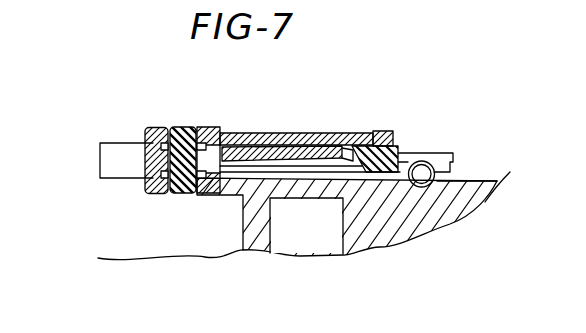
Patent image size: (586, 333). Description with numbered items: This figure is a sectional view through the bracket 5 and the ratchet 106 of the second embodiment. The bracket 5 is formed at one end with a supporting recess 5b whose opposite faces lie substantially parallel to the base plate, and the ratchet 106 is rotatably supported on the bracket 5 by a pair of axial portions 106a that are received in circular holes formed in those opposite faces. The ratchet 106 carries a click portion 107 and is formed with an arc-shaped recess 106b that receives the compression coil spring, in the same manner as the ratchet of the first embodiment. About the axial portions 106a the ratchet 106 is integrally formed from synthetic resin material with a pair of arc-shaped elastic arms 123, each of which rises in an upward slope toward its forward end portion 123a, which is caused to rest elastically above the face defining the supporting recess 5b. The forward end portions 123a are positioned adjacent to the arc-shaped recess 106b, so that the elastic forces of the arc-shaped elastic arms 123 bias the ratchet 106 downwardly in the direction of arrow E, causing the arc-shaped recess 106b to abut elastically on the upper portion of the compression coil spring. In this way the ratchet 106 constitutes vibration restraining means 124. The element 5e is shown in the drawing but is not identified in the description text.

The bracket 5 is at (248, 132).
The supporting recess 5b is at (270, 178).
The pin 5e is at (423, 182).
The ratchet 106 is at (407, 150).
The axial portions 106a is at (188, 127).
The arc-shaped recess 106b is at (452, 158).
The click portion 107 is at (100, 143).
The arc-shaped elastic arms 123 is at (307, 147).
The forward end portion 123a is at (340, 156).
The vibration restraining means 124 is at (386, 112).
The direction of arrow E is at (470, 182).